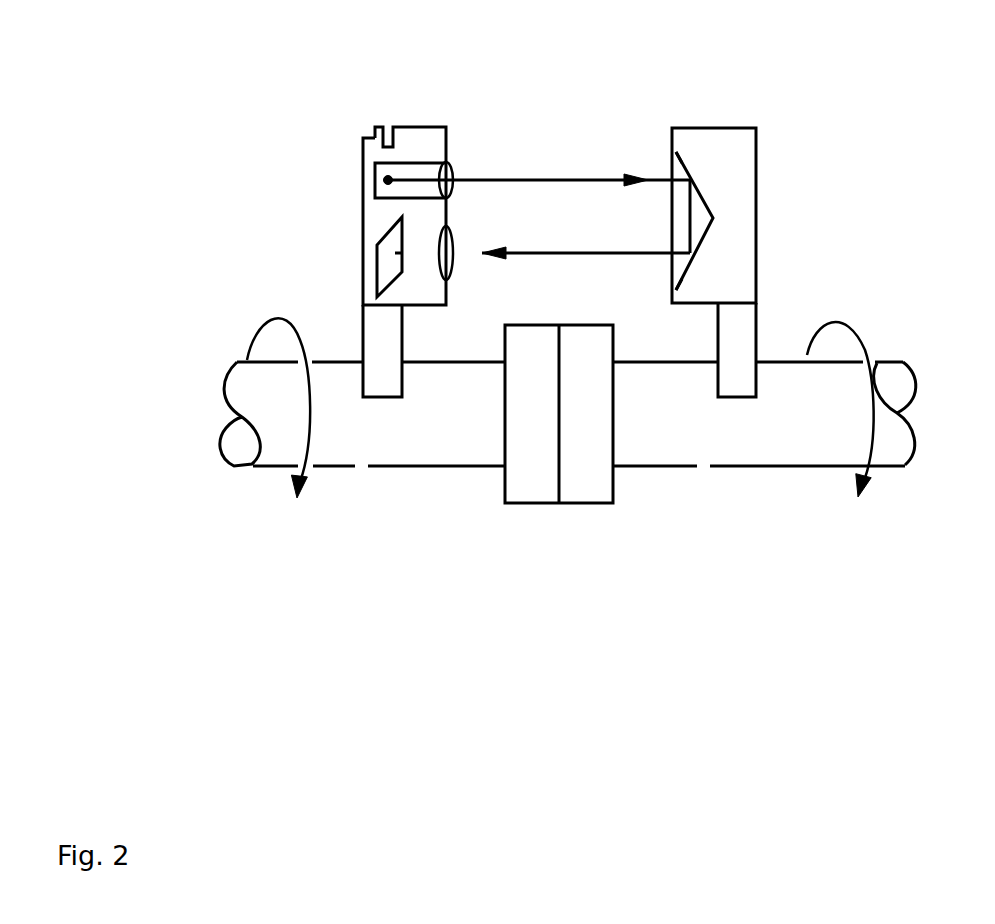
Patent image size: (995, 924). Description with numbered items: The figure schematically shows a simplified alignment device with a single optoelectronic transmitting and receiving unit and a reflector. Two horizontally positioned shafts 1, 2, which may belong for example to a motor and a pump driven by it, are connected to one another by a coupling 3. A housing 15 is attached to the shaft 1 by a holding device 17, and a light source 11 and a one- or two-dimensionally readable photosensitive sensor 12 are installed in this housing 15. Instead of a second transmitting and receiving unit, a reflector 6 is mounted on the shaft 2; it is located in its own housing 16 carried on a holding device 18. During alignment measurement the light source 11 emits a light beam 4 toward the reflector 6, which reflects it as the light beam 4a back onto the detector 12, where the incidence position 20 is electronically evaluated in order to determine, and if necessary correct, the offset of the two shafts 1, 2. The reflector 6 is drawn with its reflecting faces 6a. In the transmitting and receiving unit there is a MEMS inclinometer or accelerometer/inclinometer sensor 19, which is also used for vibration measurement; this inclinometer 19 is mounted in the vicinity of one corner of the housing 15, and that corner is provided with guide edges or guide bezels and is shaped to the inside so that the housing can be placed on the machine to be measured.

The shaft 1 is at (408, 440).
The shaft 2 is at (698, 440).
The coupling 3 is at (585, 473).
The light beam 4 is at (555, 178).
The reflected light beam 4a is at (558, 260).
The reflector 6 is at (702, 202).
The mirror facets 6a is at (680, 155).
The light source 11 is at (384, 178).
The photosensitive sensor 12 is at (382, 268).
The housing 15 is at (362, 152).
The housing 16 is at (725, 160).
The holding device 17 is at (382, 380).
The holding device 18 is at (736, 330).
The MEMS inclinometer 19 is at (390, 137).
The incidence position 20 is at (390, 252).